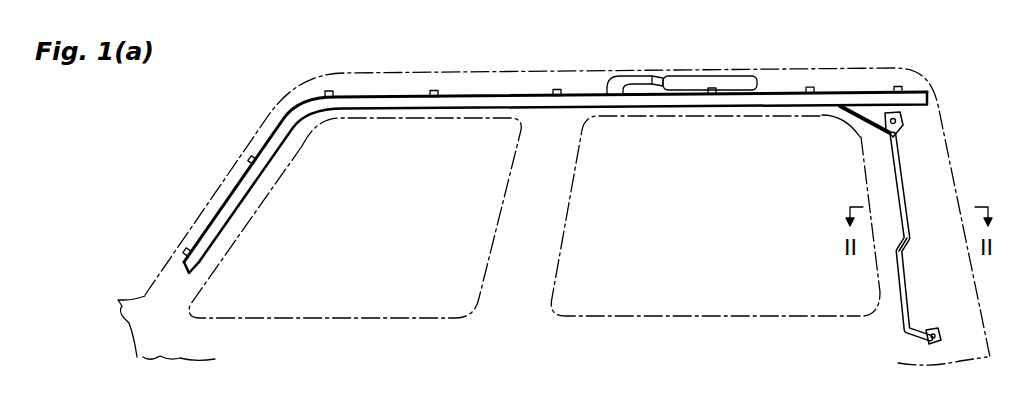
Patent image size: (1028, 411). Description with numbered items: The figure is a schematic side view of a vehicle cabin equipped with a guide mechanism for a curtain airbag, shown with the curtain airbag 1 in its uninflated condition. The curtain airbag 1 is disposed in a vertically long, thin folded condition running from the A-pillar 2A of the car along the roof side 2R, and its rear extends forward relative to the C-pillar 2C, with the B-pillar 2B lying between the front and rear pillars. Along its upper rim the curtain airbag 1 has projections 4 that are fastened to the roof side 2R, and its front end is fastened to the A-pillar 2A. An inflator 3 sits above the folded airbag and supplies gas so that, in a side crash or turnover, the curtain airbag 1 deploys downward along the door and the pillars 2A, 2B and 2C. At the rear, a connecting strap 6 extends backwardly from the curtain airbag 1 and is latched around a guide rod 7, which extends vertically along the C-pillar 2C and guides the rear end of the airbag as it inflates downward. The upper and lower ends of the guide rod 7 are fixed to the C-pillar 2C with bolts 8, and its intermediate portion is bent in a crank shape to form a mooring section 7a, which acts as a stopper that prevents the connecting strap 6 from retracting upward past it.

The curtain airbag 1 is at (439, 109).
The roof side 2R is at (474, 72).
The A-pillar 2A is at (229, 240).
The B-pillar 2B is at (566, 217).
The C-pillar 2C is at (872, 168).
The inflator 3 is at (692, 77).
The projections 4 is at (896, 87).
The connecting strap 6 is at (860, 135).
The guide rod 7 is at (898, 268).
The mooring section 7a is at (910, 246).
The bolts 8 is at (900, 120).